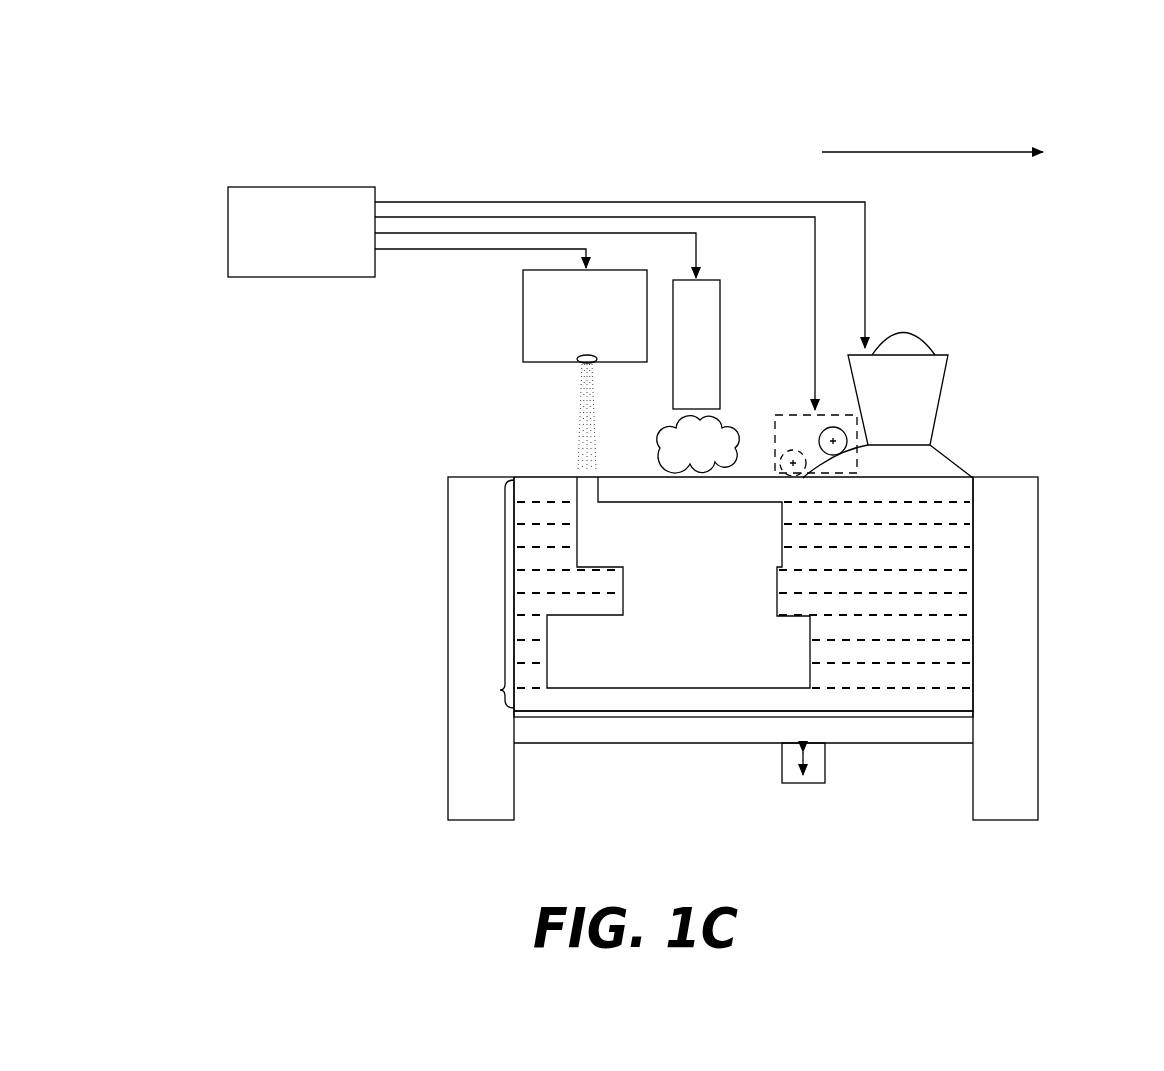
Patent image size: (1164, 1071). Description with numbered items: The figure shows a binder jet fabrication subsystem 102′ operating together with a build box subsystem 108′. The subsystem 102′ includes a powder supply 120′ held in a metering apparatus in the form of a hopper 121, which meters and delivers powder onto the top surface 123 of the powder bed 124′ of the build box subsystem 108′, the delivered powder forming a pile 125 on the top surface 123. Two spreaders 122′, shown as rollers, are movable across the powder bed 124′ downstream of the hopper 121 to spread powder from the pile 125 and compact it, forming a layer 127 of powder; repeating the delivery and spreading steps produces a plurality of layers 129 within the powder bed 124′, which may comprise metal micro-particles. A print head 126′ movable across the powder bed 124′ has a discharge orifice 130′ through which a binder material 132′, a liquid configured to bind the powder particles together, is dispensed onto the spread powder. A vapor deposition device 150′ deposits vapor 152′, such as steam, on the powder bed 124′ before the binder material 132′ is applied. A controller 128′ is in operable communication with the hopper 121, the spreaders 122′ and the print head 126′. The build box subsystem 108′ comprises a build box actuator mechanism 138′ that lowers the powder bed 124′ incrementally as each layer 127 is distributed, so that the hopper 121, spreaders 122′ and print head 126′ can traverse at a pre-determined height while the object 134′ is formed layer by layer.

The binder jet fabrication subsystem 102′ is at (1090, 94).
The controller 128′ is at (228, 232).
The print head 126′ is at (523, 316).
The discharge orifice 130′ is at (578, 361).
The binder material 132′ is at (578, 398).
The vapor deposition device 150′ is at (720, 302).
The vapor 152′ is at (662, 432).
The spreaders 122′ is at (826, 433).
The hopper 121 is at (935, 354).
The powder supply 120′ is at (897, 337).
The pile 125 is at (955, 442).
The powder bed 124′ is at (950, 478).
The top surface 123 is at (527, 470).
The layers of powder 129 is at (505, 585).
The layer of powder 127 is at (505, 700).
The object 134′ is at (727, 690).
The build box subsystem 108′ is at (1066, 742).
The build box actuator mechanism 138′ is at (825, 773).